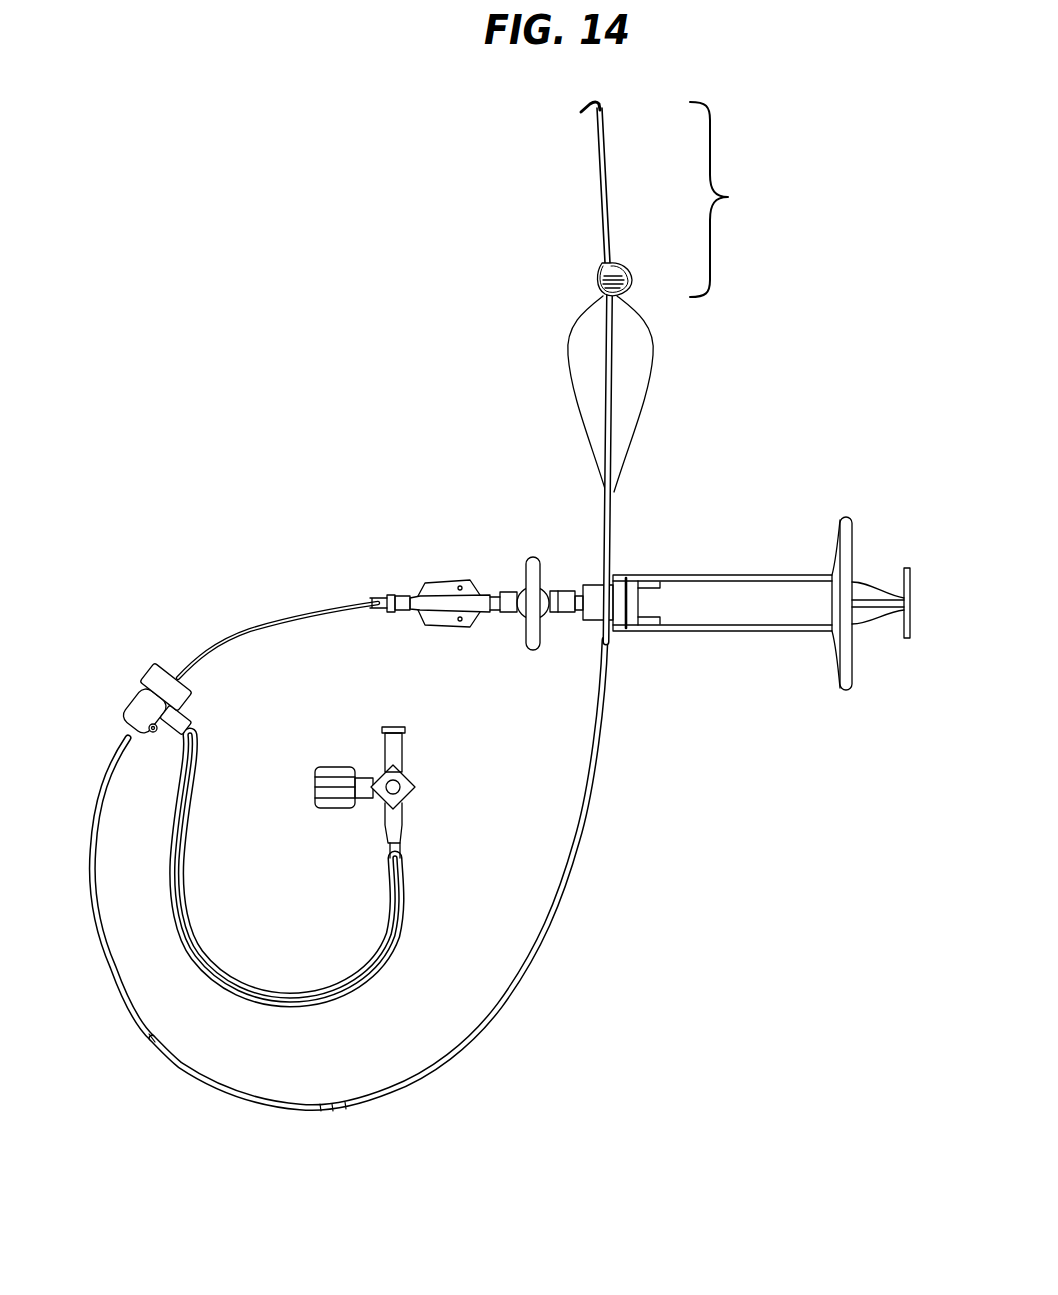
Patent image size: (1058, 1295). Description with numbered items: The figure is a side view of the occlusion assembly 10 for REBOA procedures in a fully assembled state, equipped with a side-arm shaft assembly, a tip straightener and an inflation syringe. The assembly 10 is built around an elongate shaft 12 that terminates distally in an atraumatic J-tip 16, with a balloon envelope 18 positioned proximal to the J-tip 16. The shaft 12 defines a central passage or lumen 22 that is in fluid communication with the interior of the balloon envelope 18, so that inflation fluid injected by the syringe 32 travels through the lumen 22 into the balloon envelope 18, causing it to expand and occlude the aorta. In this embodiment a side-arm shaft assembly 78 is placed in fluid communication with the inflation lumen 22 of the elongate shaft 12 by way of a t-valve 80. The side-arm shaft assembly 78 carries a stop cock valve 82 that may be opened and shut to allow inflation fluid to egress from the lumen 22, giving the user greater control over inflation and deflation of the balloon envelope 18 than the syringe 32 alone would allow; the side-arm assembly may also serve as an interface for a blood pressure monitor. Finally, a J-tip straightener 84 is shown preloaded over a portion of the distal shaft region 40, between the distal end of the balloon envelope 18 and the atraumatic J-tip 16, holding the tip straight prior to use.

The occlusion assembly 10 is at (228, 397).
The elongate shaft 12 is at (483, 1028).
The atraumatic J-tip 16 is at (596, 103).
The balloon envelope 18 is at (654, 347).
The central passage or lumen 22 is at (96, 810).
The syringe 32 is at (673, 575).
The distal shaft region 40 is at (730, 199).
The side-arm shaft assembly 78 is at (196, 948).
The t-valve 80 is at (146, 695).
The stop cock valve 82 is at (366, 778).
The J-tip straightener 84 is at (610, 212).